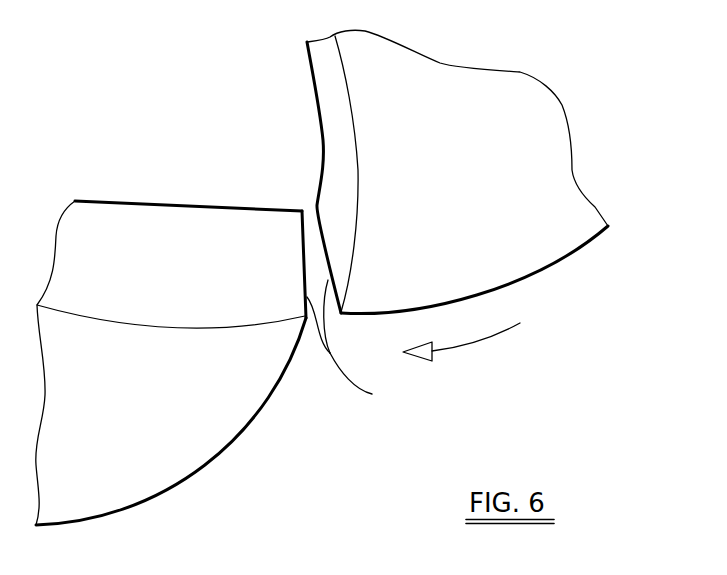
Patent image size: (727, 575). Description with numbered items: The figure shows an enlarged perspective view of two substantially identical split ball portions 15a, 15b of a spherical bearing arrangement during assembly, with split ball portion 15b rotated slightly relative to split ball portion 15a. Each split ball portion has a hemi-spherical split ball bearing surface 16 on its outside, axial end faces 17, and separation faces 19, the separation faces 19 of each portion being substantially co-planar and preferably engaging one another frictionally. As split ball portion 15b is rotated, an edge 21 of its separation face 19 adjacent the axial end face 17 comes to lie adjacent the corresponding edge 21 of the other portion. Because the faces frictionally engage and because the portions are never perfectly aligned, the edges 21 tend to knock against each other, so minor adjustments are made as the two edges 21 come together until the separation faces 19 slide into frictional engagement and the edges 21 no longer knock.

The split ball portion 15a is at (220, 432).
The split ball portion 15b is at (525, 238).
The hemi-spherical split ball bearing surface 16 is at (538, 162).
The axial end face 17 is at (337, 152).
The separation face 19 is at (190, 226).
The edge 21 is at (356, 343).